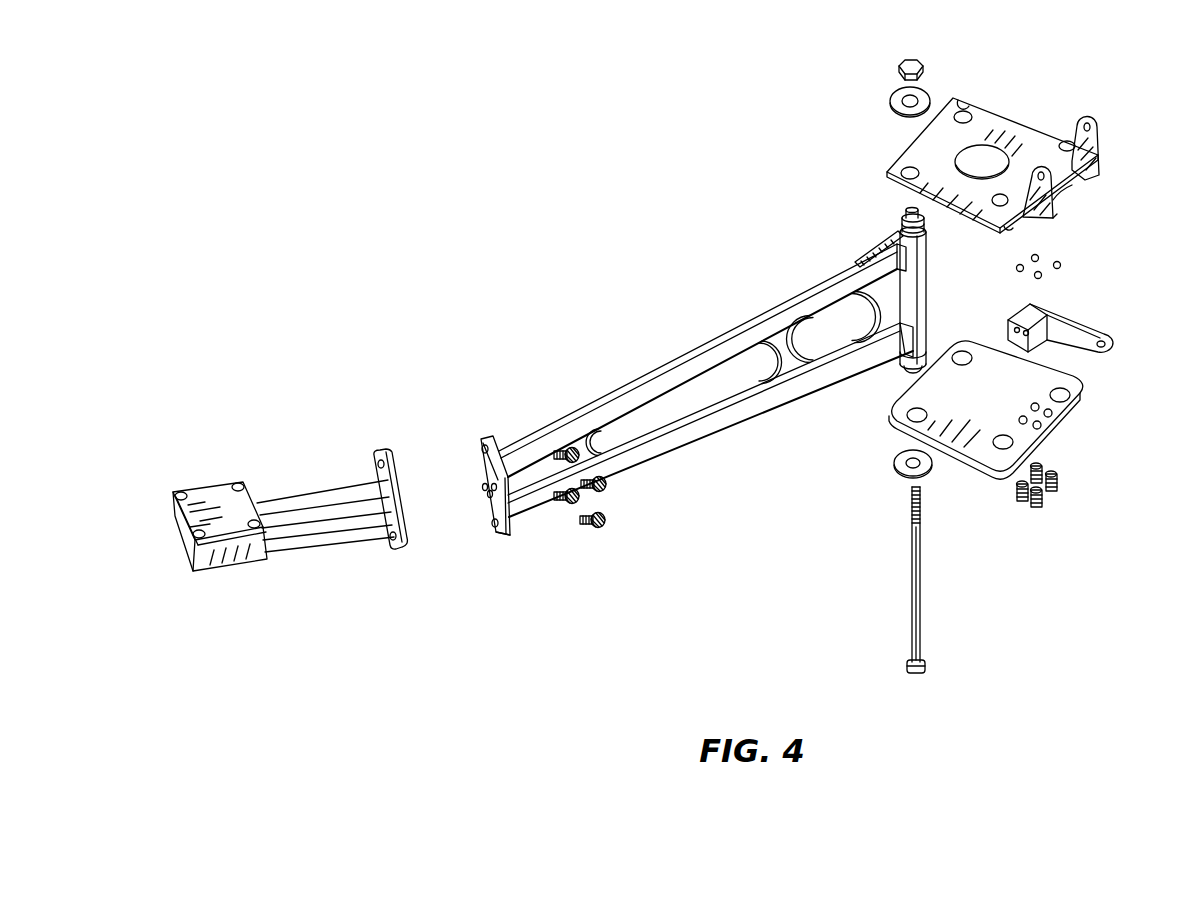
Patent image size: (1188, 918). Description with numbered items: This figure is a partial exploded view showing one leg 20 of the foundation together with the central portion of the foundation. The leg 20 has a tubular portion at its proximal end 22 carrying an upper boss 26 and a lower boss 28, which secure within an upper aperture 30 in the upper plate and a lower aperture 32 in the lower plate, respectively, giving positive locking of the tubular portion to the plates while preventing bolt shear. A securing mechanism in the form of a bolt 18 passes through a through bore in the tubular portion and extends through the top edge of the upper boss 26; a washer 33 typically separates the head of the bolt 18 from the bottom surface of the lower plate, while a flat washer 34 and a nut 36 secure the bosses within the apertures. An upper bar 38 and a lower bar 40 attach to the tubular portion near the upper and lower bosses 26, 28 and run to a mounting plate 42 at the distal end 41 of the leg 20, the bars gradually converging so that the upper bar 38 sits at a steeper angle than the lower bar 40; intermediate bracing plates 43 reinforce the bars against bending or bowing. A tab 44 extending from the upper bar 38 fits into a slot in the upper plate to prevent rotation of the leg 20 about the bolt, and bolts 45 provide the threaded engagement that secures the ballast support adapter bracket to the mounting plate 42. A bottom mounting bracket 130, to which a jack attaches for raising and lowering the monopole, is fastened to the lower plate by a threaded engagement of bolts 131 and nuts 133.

The bolt 18 is at (922, 577).
The leg 20 is at (762, 305).
The proximal end 22 is at (932, 318).
The upper boss 26 is at (900, 218).
The lower boss 28 is at (896, 378).
The upper aperture 30 is at (966, 104).
The lower aperture 32 is at (1086, 386).
The washer 33 is at (894, 465).
The flat washer 34 is at (890, 102).
The nut 36 is at (898, 66).
The upper bar 38 is at (637, 368).
The lower bar 40 is at (688, 447).
The distal end 41 is at (505, 537).
The mounting plate 42 is at (483, 479).
The intermediate bracing plates 43 is at (603, 432).
The tab 44 is at (875, 253).
The bolts 45 is at (596, 528).
The bottom mounting bracket 130 is at (1082, 348).
The bolts 131 is at (1060, 487).
The nuts 133 is at (1064, 267).